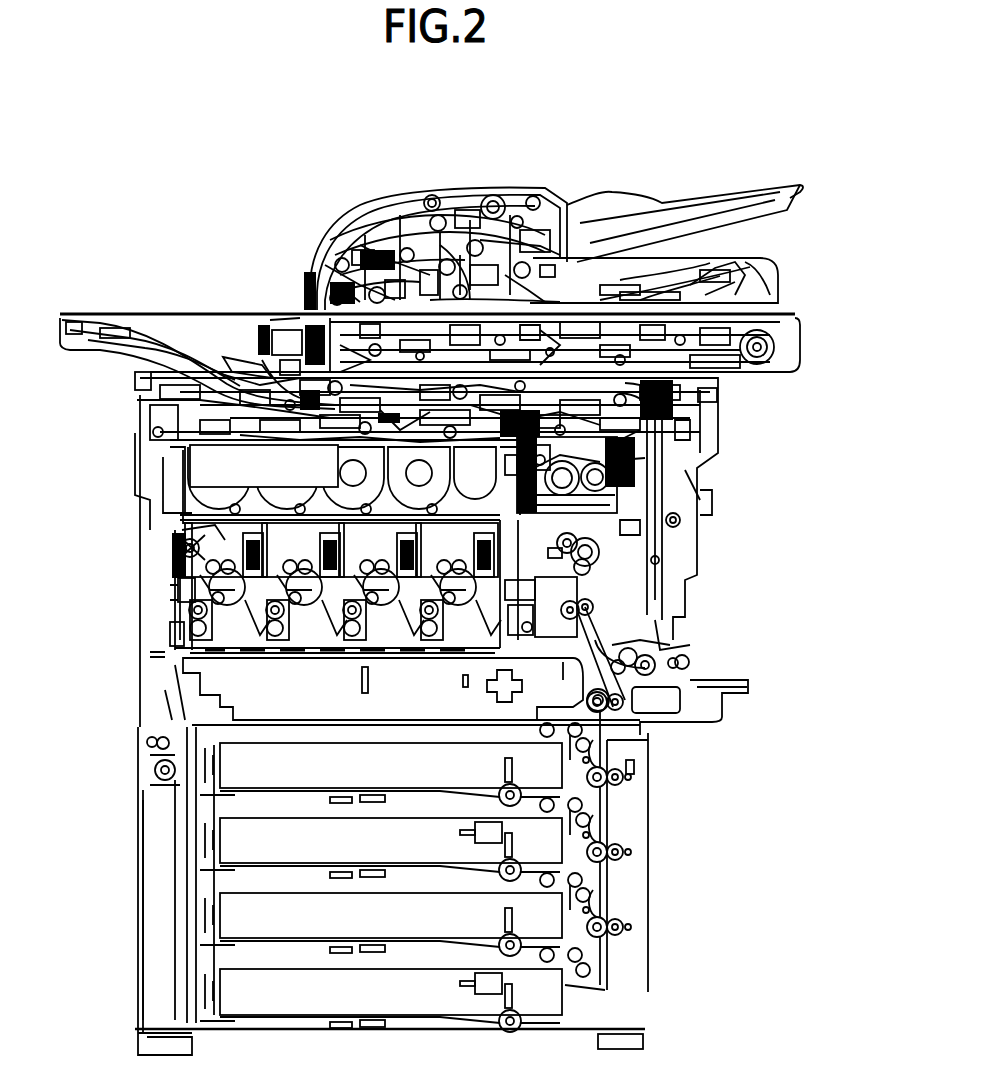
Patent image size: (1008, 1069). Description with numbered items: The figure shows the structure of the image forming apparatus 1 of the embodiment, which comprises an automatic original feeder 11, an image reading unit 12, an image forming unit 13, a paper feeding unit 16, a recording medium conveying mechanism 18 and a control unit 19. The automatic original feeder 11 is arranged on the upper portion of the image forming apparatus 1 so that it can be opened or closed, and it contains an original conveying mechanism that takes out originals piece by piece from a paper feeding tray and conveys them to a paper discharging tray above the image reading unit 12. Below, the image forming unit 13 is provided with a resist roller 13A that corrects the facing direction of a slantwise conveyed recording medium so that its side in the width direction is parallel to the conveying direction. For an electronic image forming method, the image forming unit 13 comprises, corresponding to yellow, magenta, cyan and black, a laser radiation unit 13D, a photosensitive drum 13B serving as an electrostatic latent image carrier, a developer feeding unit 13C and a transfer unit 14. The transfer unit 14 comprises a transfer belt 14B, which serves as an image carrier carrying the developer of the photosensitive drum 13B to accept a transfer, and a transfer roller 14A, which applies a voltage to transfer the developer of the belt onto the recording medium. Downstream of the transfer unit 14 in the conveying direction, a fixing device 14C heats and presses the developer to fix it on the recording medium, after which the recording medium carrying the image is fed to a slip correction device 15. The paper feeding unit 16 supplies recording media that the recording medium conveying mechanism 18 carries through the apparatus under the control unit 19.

The image forming apparatus 1 is at (696, 139).
The automatic original feeder 11 is at (818, 178).
The image reading unit 12 is at (818, 372).
The slip correction device 15 is at (818, 427).
The image forming unit 13 is at (818, 427).
The transfer unit 14 is at (753, 427).
The transfer roller 14A is at (608, 548).
The transfer belt 14B is at (175, 542).
The fixing device 14C is at (668, 481).
The resist roller 13A is at (633, 611).
The photosensitive drum 13B is at (183, 590).
The developer feeding unit 13C is at (173, 636).
The laser radiation unit 13D is at (227, 680).
The paper feeding unit 16 is at (245, 768).
The recording medium conveying mechanism 18 is at (625, 772).
The control unit 19 is at (200, 455).